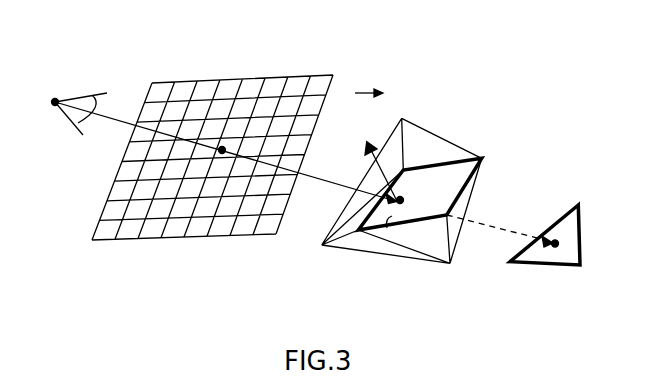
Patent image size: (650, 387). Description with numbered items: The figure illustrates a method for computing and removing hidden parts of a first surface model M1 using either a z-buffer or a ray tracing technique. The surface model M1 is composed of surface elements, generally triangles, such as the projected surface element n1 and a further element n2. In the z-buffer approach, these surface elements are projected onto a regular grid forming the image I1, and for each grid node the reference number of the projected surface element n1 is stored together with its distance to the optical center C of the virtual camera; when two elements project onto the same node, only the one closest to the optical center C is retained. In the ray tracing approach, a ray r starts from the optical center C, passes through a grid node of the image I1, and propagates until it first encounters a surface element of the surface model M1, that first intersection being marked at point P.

The optical center C is at (62, 110).
The image I1 is at (212, 135).
The ray r is at (226, 153).
The intersection point with surface normal P is at (391, 178).
The first surface model M1 is at (577, 207).
The projected surface element n1 is at (362, 233).
The second mesh triangle n2 is at (542, 253).